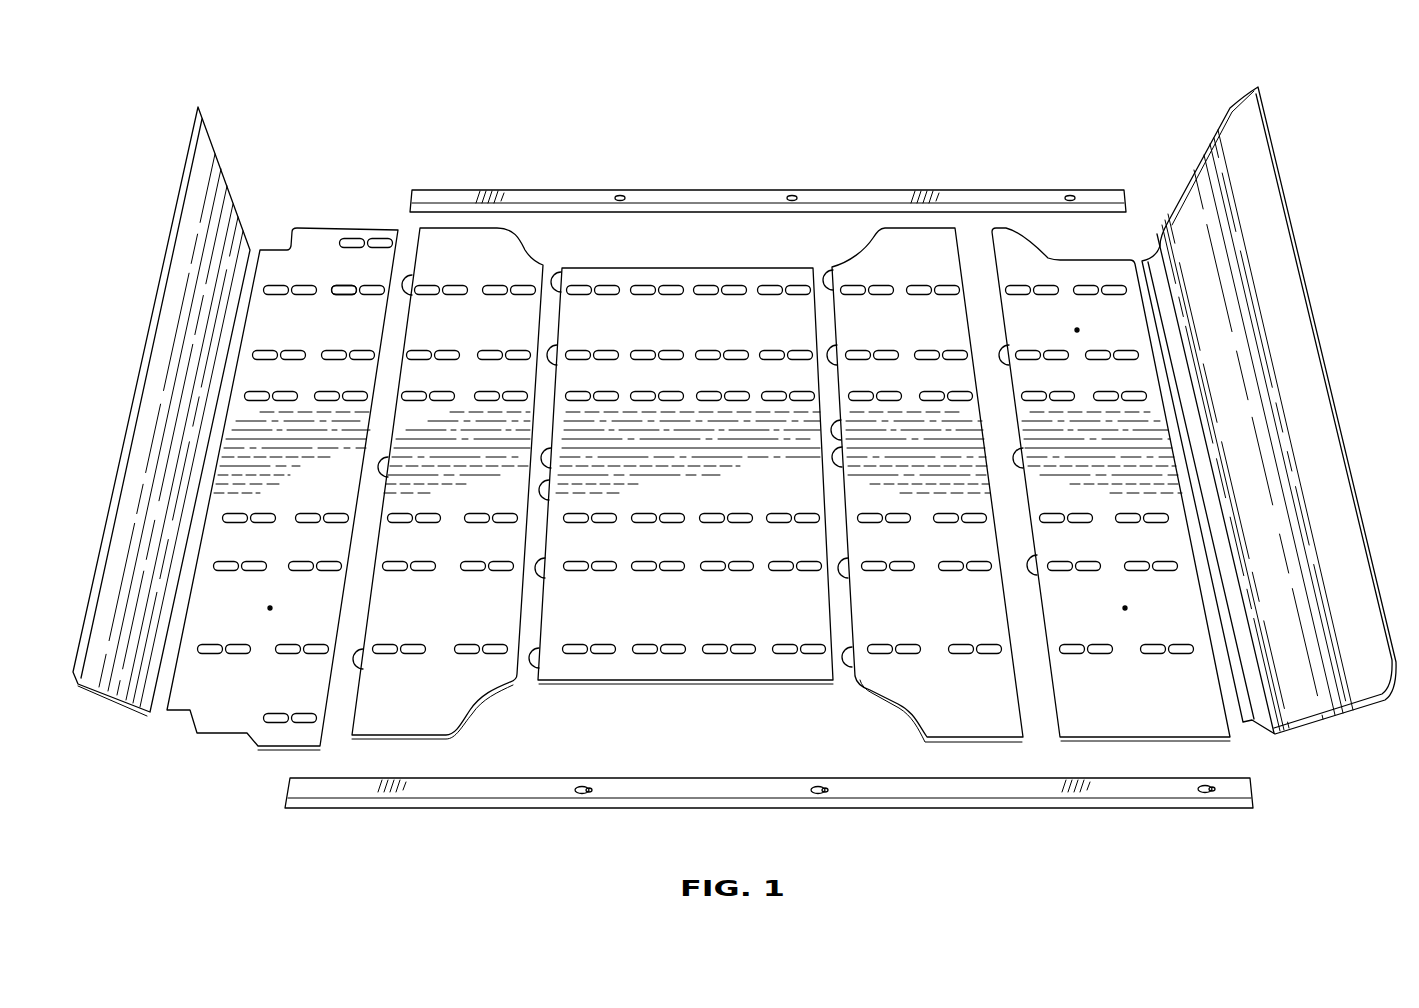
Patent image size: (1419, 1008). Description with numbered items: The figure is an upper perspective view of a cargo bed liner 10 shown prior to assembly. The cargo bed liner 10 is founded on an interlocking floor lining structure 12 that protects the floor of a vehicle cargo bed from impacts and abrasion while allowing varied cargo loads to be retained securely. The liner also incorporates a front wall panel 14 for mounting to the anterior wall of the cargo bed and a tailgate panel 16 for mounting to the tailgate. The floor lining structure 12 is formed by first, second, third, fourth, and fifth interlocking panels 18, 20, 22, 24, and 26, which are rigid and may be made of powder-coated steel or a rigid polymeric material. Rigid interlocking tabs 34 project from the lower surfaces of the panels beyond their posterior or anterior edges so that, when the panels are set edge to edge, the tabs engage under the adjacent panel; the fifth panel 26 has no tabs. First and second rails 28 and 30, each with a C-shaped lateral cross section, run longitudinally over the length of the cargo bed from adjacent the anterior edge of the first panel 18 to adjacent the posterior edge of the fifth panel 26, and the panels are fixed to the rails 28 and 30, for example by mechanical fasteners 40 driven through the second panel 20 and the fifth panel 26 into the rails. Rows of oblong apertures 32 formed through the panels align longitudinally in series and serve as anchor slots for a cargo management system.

The cargo bed liner 10 is at (1117, 90).
The interlocking floor lining structure 12 is at (572, 824).
The front wall panel 14 is at (1325, 362).
The tailgate panel 16 is at (181, 168).
The first interlocking panel 18 is at (1174, 621).
The second interlocking panel 20 is at (948, 623).
The third interlocking panel 22 is at (701, 623).
The fourth interlocking panel 24 is at (461, 623).
The fifth interlocking panel 26 is at (327, 620).
The first rail 28 is at (693, 191).
The second rail 30 is at (866, 790).
The apertures 32 is at (562, 652).
The interlocking tabs 34 is at (532, 663).
The mechanical fasteners 40 is at (318, 332).